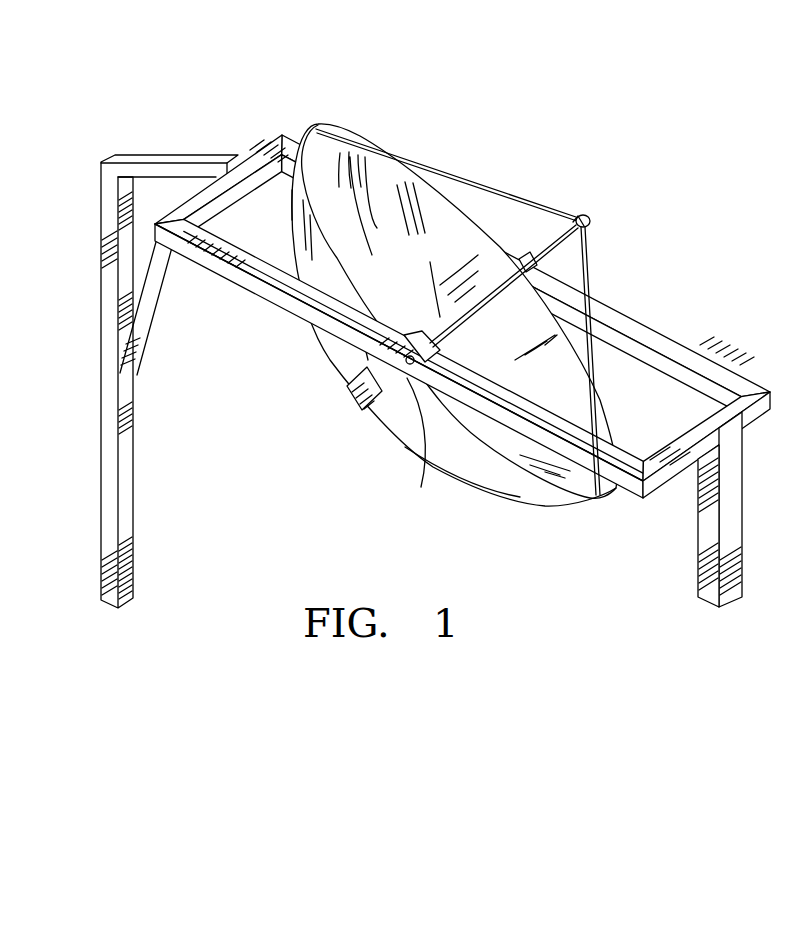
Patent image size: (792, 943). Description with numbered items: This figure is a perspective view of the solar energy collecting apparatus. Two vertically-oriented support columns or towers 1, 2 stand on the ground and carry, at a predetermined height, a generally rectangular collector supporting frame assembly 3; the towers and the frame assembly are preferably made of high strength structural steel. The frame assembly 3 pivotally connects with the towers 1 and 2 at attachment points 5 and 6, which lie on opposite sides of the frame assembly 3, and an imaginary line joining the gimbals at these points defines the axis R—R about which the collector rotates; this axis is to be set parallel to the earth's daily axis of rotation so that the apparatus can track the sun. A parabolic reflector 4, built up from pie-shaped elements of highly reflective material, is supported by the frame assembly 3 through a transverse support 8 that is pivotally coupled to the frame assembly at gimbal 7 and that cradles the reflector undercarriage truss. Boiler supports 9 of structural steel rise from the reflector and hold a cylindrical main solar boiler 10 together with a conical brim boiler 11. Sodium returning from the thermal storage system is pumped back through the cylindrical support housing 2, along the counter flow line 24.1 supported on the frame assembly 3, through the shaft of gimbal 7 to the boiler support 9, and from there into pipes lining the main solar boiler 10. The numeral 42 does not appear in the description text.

The support column 1 is at (200, 166).
The support column 2 is at (710, 548).
The collector supporting frame assembly 3 is at (225, 255).
The parabolic reflector 4 is at (383, 433).
The attachment point 5 is at (247, 190).
The attachment point 6 is at (697, 431).
The pivotal coupling 7 is at (416, 446).
The transverse support 8 is at (335, 412).
The boiler support 9 is at (480, 313).
The main solar boiler 10 is at (590, 218).
The conical brim boiler 11 is at (552, 207).
The frame member 42 is at (718, 407).
The counter flow line 24.1 is at (636, 487).